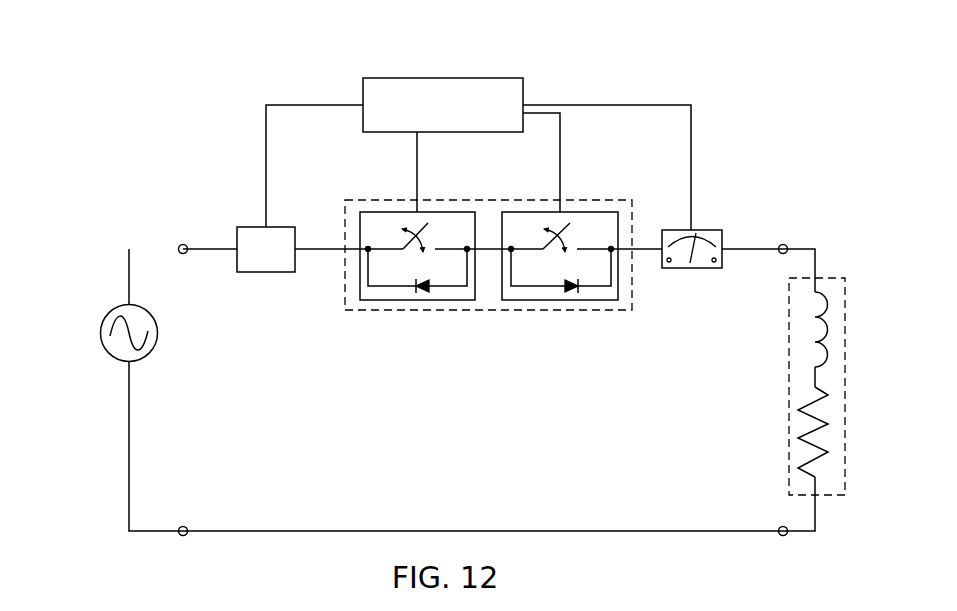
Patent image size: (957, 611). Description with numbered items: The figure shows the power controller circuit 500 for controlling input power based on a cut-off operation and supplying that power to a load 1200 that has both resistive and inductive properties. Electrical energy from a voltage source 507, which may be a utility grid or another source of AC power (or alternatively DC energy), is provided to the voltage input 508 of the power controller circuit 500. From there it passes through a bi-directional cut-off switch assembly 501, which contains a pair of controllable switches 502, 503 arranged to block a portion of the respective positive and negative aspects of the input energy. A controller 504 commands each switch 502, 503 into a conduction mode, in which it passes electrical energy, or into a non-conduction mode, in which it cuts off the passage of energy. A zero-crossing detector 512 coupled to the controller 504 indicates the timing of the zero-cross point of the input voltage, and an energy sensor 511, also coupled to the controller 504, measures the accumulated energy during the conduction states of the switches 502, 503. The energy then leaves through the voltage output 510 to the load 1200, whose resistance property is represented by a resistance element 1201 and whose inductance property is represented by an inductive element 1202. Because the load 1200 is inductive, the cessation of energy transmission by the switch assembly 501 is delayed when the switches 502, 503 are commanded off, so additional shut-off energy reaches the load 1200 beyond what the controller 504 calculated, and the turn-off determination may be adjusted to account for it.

The power controller circuit 500 is at (282, 47).
The bi-directional cut-off switch assembly 501 is at (345, 222).
The switch 502 is at (366, 210).
The switch 503 is at (606, 212).
The controller 504 is at (447, 78).
The voltage source 507 is at (103, 318).
The voltage input 508 is at (186, 254).
The voltage output 510 is at (783, 254).
The zero-crossing detector 511 is at (707, 230).
The energy sensor 512 is at (237, 243).
The load 1200 is at (789, 352).
The resistance element 1201 is at (820, 290).
The inductive element 1202 is at (813, 393).